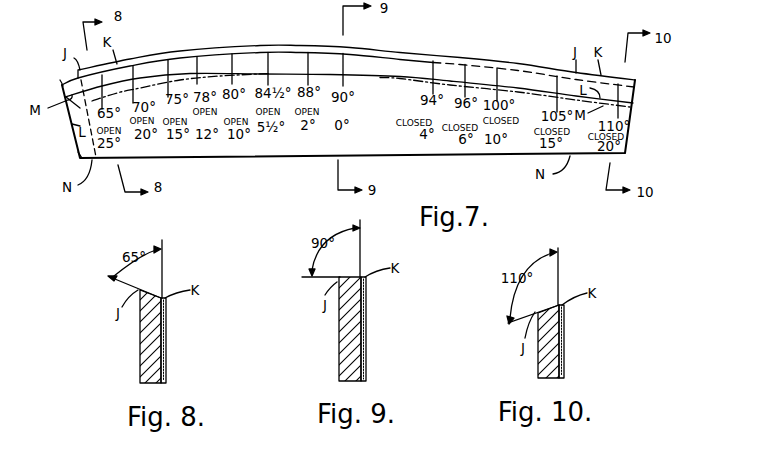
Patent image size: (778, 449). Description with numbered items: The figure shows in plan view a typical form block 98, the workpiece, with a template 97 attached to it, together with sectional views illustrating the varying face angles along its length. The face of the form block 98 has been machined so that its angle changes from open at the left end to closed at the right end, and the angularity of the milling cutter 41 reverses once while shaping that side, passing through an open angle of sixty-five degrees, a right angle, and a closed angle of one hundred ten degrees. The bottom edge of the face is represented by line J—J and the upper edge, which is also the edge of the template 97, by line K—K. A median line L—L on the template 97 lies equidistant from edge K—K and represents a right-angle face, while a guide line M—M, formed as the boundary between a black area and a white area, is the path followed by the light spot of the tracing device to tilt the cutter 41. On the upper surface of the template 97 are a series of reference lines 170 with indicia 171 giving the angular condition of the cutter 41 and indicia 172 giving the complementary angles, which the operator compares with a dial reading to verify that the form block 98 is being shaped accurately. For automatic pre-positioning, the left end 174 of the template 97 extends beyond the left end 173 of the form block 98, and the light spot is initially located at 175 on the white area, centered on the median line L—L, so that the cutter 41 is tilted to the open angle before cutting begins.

In FIG. 7, the milling cutter 41 is at (62, 80).
In FIG. 7, the template 97 is at (317, 150).
In FIG. 8, the template 97 is at (167, 362).
In FIG. 9, the template 97 is at (367, 337).
In FIG. 10, the template 97 is at (565, 353).
In FIG. 7, the form block 98 is at (176, 52).
In FIG. 8, the form block 98 is at (140, 342).
In FIG. 9, the form block 98 is at (339, 347).
In FIG. 10, the form block 98 is at (542, 360).
In FIG. 7, the reference lines 170 is at (343, 67).
In FIG. 7, the indicia 171 is at (106, 108).
In FIG. 7, the indicia 172 is at (124, 145).
In FIG. 7, the left end of form block 173 is at (83, 153).
In FIG. 7, the left end of template 174 is at (97, 144).
In FIG. 7, the initial light spot location 175 is at (80, 108).